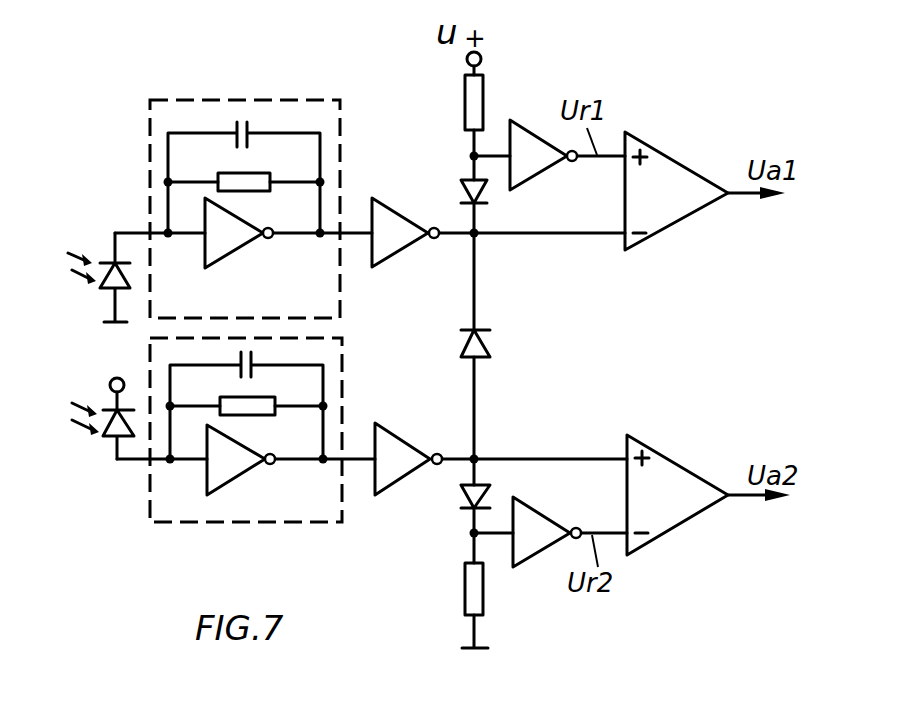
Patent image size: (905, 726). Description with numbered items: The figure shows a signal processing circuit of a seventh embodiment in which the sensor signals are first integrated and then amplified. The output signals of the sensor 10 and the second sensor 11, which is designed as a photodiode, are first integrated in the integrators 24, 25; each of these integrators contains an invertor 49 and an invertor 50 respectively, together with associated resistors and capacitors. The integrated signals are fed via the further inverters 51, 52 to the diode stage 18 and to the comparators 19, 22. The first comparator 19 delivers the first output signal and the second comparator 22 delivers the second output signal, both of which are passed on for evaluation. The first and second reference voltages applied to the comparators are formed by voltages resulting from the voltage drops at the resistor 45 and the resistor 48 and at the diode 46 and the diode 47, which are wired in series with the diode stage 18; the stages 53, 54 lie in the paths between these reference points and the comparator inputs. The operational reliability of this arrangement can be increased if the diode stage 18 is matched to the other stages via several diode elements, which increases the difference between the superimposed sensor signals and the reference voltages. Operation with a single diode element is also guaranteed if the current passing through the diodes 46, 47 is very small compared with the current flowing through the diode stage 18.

The sensor 10 is at (100, 288).
The second sensor 11 is at (107, 433).
The diode stage 18 is at (483, 340).
The first comparator 19 is at (680, 222).
The second comparator 22 is at (685, 520).
The integrator 24 is at (292, 224).
The integrator 25 is at (246, 460).
The resistor 45 is at (465, 103).
The diode 46 is at (462, 182).
The diode 47 is at (465, 498).
The resistor 48 is at (465, 583).
The invertor 49 is at (240, 248).
The invertor 50 is at (248, 470).
The further inverter 51 is at (397, 255).
The further inverter 52 is at (400, 435).
The inverter 53 is at (540, 172).
The inverter 54 is at (566, 528).